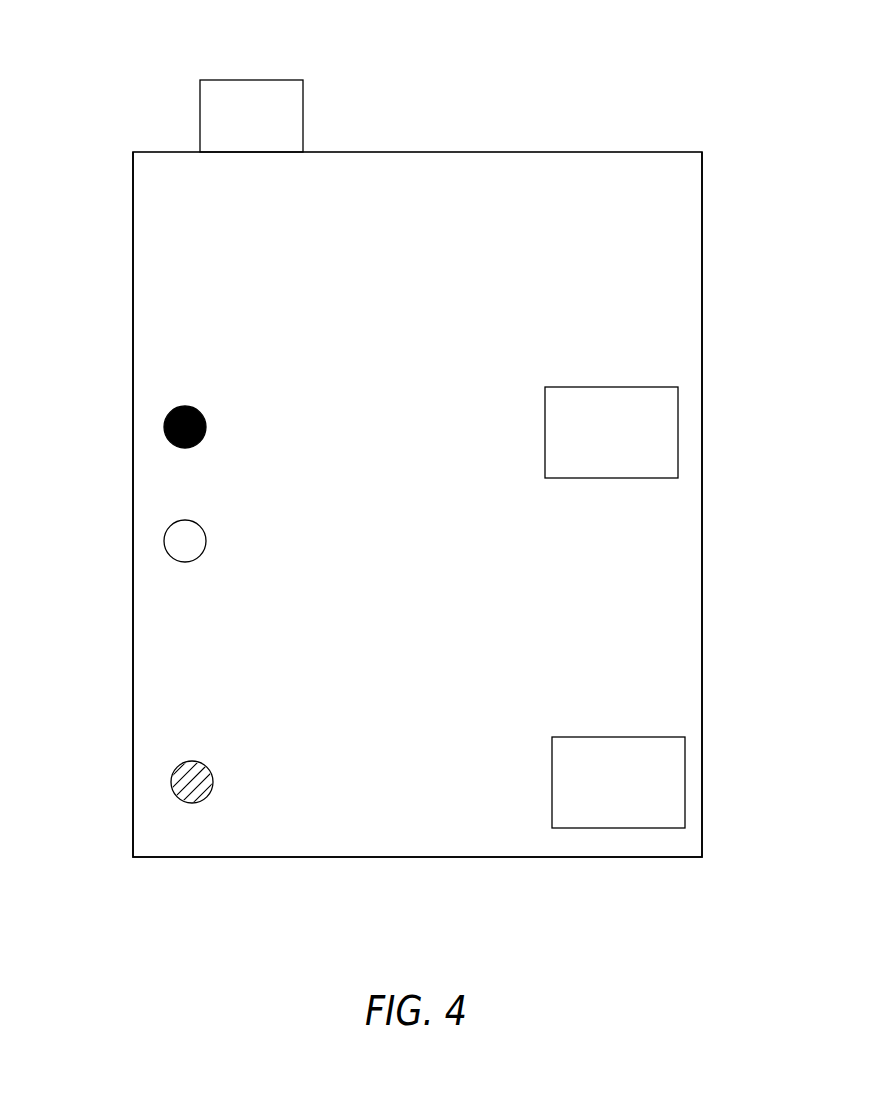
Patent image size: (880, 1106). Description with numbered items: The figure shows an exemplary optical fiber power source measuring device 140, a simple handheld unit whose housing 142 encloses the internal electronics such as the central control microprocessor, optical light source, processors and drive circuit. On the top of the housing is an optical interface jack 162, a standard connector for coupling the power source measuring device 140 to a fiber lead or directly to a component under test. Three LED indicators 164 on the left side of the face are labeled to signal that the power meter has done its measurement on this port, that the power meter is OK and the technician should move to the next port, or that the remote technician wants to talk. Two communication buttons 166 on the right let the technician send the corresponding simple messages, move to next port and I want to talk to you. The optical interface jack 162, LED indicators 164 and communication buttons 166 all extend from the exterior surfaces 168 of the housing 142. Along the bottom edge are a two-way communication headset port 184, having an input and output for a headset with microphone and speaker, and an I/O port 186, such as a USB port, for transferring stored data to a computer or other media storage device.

The power source measuring device 140 is at (266, 930).
The housing 142 is at (623, 160).
The optical interface jack 162 is at (238, 78).
The LED indicators 164 is at (163, 425).
The communication button 166 is at (680, 432).
The exterior surfaces 168 is at (200, 150).
The two-way communication headset port 184 is at (365, 880).
The input/output I/O port 186 is at (505, 880).